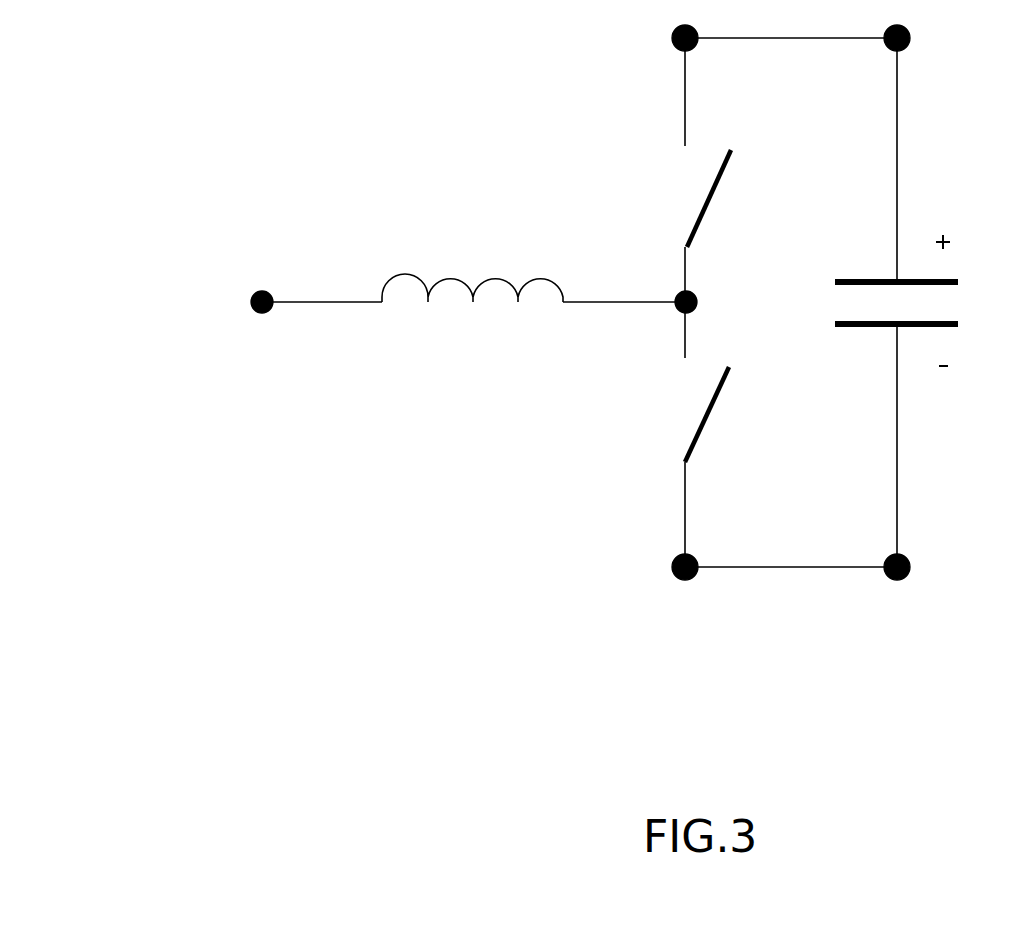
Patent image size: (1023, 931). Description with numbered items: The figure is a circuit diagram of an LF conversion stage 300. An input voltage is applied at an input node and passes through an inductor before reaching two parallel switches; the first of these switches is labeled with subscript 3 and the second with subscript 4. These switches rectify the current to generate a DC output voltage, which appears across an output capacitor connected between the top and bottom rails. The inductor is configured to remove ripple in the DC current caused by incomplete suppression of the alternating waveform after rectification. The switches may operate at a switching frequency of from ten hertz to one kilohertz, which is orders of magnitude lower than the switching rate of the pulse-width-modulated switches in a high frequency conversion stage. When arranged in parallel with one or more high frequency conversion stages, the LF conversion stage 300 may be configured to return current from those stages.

The LF conversion stage 300 is at (250, 52).
The switch S3 3 is at (711, 198).
The switch S4 4 is at (707, 414).